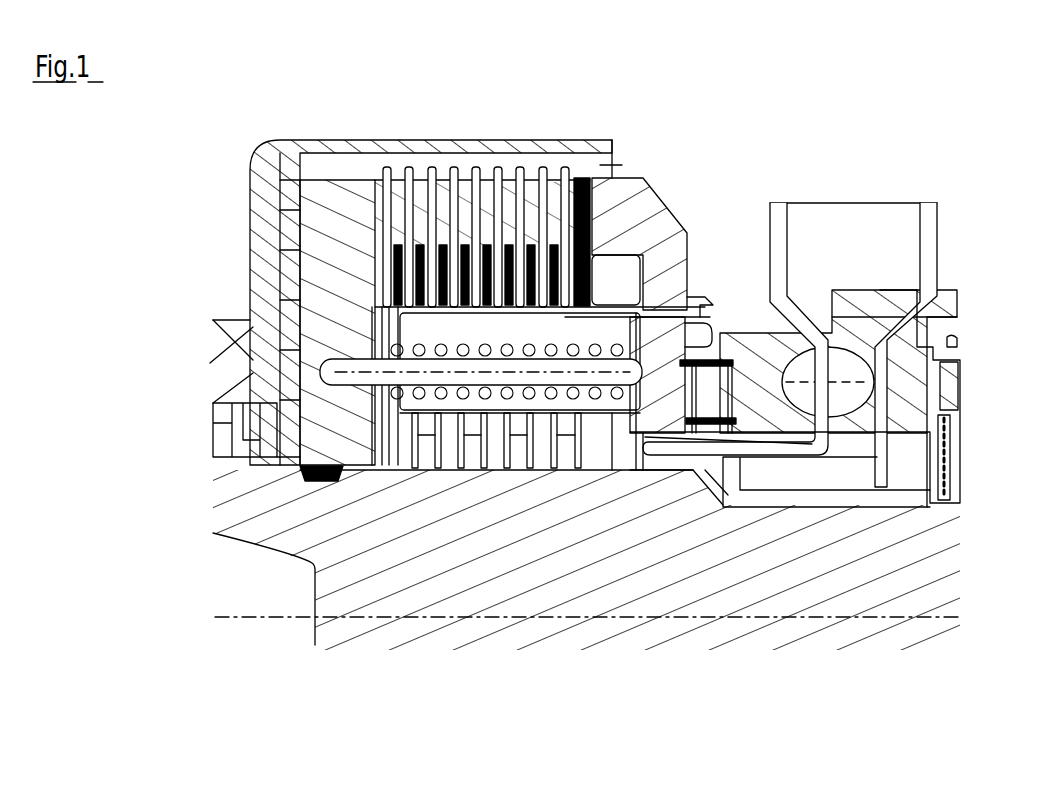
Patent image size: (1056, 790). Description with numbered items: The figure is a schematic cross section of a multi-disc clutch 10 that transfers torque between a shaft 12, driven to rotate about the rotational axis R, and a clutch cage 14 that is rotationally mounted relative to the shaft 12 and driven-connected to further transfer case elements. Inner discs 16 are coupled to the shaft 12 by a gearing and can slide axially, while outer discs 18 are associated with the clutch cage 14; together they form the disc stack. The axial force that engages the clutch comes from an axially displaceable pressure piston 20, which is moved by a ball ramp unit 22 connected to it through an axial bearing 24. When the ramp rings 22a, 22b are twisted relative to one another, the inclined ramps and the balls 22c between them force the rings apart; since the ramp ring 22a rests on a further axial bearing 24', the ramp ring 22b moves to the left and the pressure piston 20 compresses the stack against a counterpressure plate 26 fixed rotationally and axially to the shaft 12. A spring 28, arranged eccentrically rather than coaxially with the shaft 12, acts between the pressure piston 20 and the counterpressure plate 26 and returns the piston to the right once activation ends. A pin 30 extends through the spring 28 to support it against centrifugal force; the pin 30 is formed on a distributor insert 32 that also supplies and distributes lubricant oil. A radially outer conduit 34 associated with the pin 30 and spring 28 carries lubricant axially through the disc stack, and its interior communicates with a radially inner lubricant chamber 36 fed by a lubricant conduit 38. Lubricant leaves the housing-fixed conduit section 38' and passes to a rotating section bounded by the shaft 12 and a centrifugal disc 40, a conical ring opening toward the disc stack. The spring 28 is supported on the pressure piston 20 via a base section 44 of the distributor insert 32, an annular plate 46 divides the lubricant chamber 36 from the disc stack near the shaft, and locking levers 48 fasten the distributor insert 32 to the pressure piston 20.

The multi-disc clutch 10 is at (703, 52).
The shaft 12 is at (945, 588).
The clutch cage 14 is at (318, 140).
The inner discs 16 is at (513, 430).
The outer discs 18 is at (488, 182).
The pressure piston 20 is at (684, 228).
The ball ramp unit 22 is at (925, 300).
The ramp ring 22a is at (905, 445).
The ramp ring 22b is at (752, 300).
The balls 22c is at (829, 360).
The axial bearing 24 is at (838, 273).
The axial bearing 24' is at (957, 396).
The counterpressure plate 26 is at (453, 326).
The spring 28 is at (620, 465).
The pin 30 is at (440, 482).
The distributor insert 32 is at (611, 187).
The conduit 34 is at (335, 353).
The lubricant chamber 36 is at (627, 475).
The lubricant conduit 38 is at (780, 572).
The lubricant conduit section 38' is at (896, 573).
The centrifugal disc 40 is at (840, 418).
The base section 44 is at (641, 300).
The annular plate 46 is at (614, 470).
The locking levers 48 is at (711, 358).
The rotational axis R is at (262, 620).